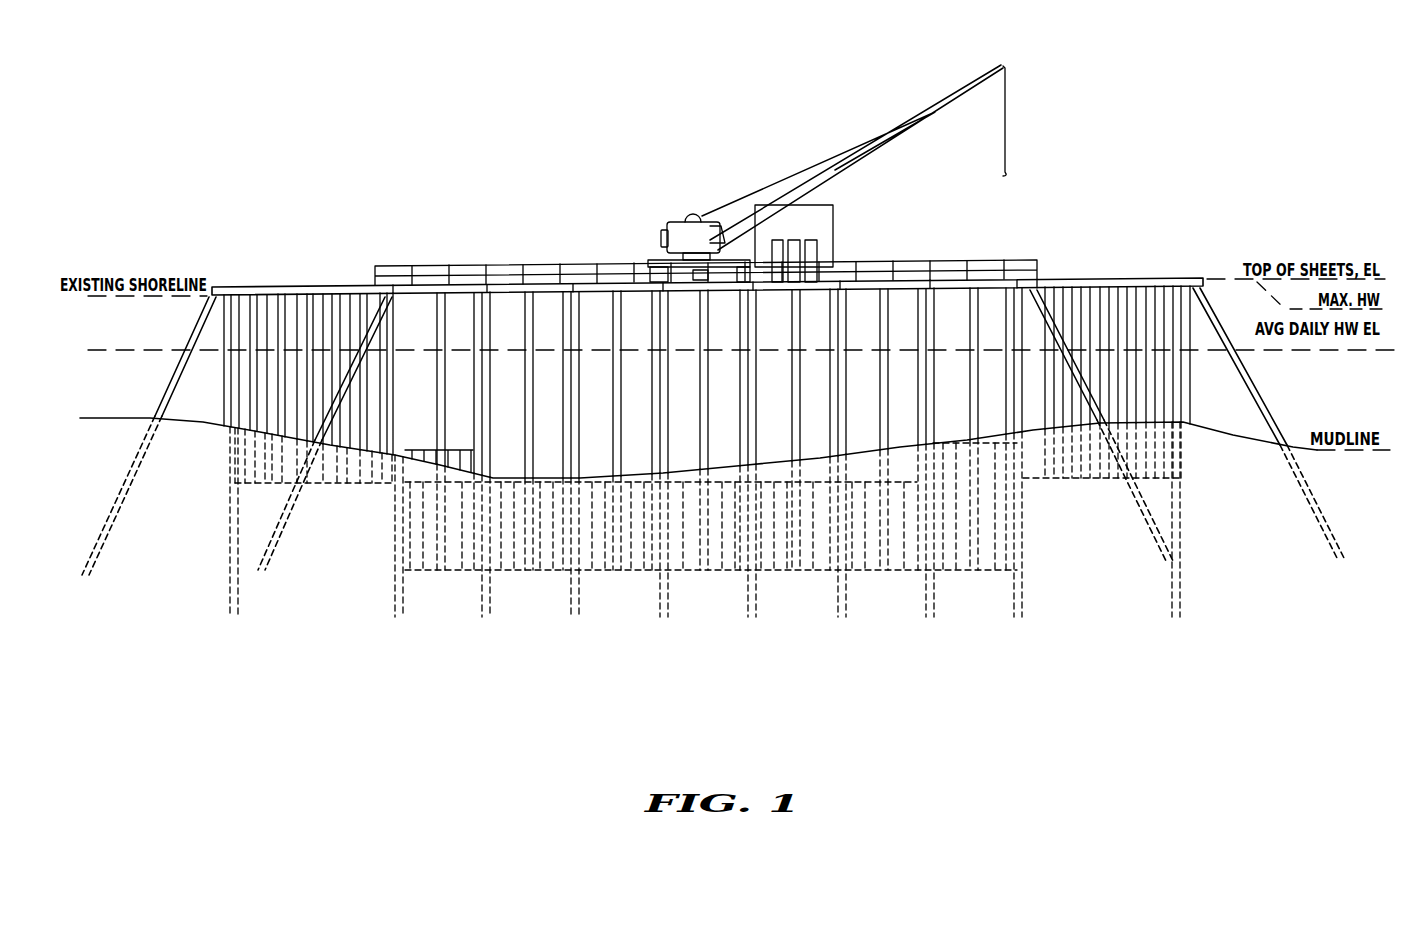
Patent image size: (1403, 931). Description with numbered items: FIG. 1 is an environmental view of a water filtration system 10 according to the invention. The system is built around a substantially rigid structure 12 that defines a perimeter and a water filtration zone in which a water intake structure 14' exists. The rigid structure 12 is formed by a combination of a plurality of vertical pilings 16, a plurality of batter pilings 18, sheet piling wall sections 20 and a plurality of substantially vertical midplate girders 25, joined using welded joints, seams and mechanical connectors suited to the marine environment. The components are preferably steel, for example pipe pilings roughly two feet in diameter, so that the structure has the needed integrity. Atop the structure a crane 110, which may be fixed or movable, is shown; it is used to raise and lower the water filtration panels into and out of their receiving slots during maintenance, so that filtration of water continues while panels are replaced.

The water filtration system 10 is at (1226, 214).
The substantially rigid structure 12 is at (219, 262).
The water intake structure 14' is at (825, 242).
The vertical pilings 16 is at (393, 437).
The batter pilings 18 is at (193, 335).
The sheet piling wall sections 20 is at (277, 300).
The substantially vertical midplate girders 25 is at (444, 315).
The crane 110 is at (680, 227).